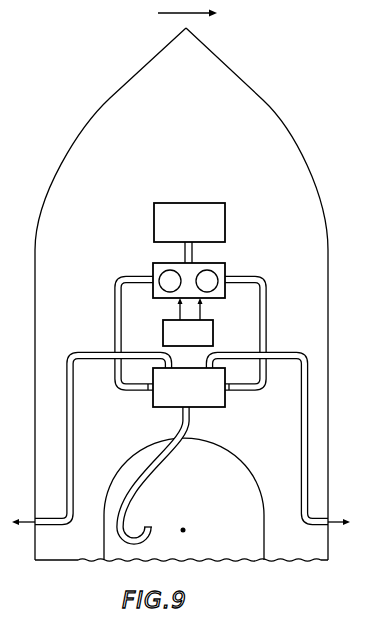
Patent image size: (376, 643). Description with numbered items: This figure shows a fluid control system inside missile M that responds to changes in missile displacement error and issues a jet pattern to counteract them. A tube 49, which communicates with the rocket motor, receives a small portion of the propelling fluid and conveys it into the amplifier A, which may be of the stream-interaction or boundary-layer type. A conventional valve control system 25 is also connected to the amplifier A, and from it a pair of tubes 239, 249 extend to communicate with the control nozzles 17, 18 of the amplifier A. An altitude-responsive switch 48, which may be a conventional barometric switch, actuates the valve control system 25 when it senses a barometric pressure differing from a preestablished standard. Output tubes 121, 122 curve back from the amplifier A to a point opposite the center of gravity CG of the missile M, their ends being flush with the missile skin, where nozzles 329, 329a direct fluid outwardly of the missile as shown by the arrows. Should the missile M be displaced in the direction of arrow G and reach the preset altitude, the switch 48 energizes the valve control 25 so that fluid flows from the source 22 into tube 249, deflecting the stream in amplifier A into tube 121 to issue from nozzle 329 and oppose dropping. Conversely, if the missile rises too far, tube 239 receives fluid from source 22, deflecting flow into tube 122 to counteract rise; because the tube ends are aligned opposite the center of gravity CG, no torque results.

The source 22 is at (196, 229).
The valve control system 25 is at (219, 276).
The altitude-responsive switch 48 is at (188, 322).
The amplifier A is at (193, 395).
The tube 249 is at (117, 326).
The tube 239 is at (265, 322).
The output tube 122 is at (74, 446).
The output tube 121 is at (303, 446).
The control nozzle 18 is at (148, 390).
The control nozzle 17 is at (228, 390).
The tube 49 is at (155, 466).
The center of gravity CG is at (184, 529).
The nozzle 329a is at (34, 526).
The nozzle 329 is at (330, 526).
The missile M is at (106, 97).
The arrow G is at (187, 8).